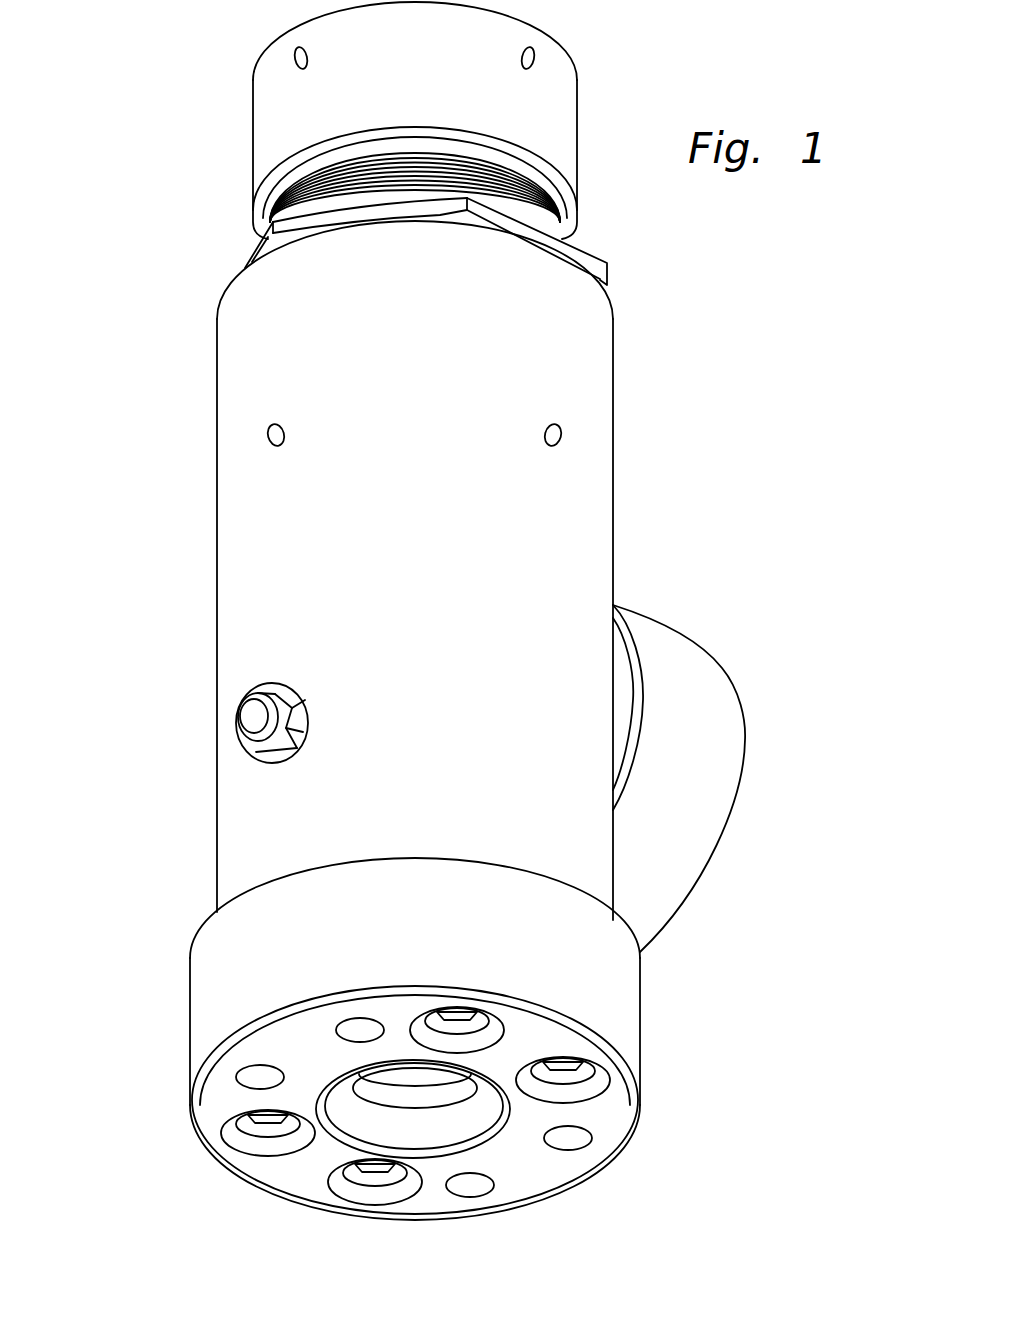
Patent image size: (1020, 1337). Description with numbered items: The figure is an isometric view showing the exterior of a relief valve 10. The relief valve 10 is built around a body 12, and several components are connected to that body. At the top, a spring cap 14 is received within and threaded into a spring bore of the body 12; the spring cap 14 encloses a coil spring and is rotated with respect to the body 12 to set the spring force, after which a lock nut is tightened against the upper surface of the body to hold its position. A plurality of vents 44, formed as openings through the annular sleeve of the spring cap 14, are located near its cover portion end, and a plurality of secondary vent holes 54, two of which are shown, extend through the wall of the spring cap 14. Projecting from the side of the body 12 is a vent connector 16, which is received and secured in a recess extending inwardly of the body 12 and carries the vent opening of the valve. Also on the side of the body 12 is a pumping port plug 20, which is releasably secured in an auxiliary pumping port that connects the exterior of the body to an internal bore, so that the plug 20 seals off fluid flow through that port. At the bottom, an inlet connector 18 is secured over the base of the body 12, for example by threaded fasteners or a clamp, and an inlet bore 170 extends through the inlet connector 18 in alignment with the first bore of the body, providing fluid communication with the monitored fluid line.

The relief valve 10 is at (132, 306).
The body 12 is at (216, 555).
The spring cap 14 is at (252, 133).
The vent connector 16 is at (733, 727).
The inlet connector 18 is at (384, 1039).
The pumping port plug 20 is at (250, 716).
The vents 44 is at (308, 66).
The secondary vent holes 54 is at (278, 422).
The inlet bore 170 is at (462, 1115).